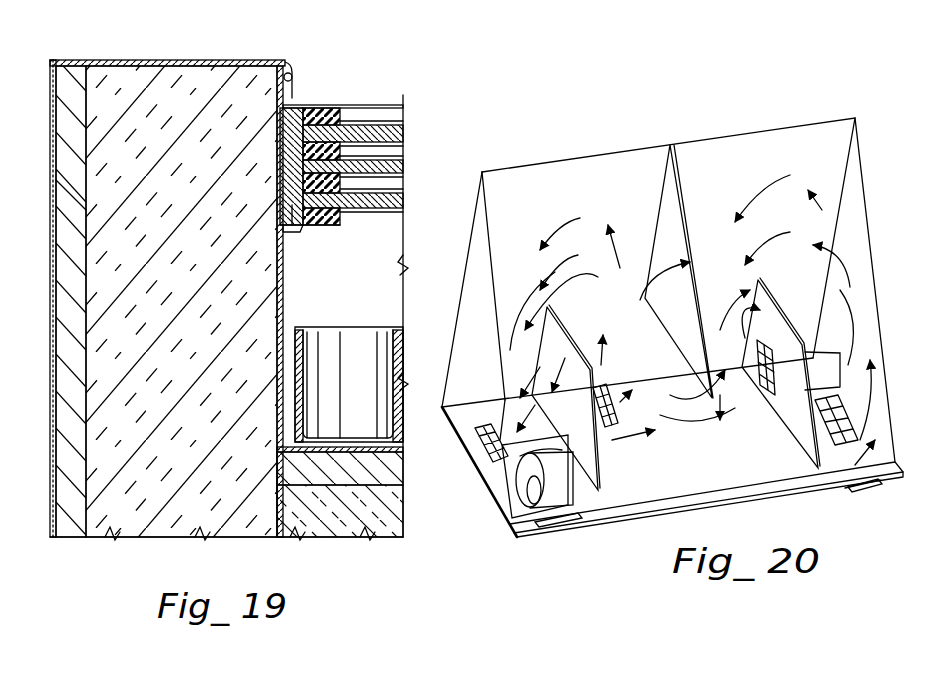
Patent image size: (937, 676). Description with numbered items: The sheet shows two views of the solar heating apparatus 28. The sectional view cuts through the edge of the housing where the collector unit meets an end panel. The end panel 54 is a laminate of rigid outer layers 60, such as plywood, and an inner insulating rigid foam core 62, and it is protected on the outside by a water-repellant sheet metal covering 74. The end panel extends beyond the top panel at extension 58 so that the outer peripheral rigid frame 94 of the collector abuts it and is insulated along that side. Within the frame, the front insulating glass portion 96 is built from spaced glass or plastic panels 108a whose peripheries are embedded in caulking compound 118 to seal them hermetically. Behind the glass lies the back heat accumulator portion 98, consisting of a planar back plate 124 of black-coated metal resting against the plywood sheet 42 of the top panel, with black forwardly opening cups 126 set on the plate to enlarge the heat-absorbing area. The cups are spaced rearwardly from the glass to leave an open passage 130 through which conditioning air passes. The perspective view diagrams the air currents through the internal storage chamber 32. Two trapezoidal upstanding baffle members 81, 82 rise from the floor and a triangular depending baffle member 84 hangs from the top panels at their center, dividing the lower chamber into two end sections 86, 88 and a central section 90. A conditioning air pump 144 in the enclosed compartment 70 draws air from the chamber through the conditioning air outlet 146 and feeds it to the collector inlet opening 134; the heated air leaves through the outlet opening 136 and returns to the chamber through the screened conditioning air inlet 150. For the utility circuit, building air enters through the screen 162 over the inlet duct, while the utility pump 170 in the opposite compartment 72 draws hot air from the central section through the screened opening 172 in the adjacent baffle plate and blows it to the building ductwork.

In FIG. 20, the solar heating apparatus 28 is at (785, 112).
In FIG. 20, the internal storage chamber 32 is at (630, 195).
In FIG. 19, the plywood sheets 42 is at (385, 480).
In FIG. 19, the end panel 54 is at (178, 88).
In FIG. 19, the end panel extension 58 is at (232, 70).
In FIG. 19, the outer layers 60 is at (75, 350).
In FIG. 19, the inner insulating rigid foam core 62 is at (100, 245).
In FIG. 20, the pump containing compartment 70 is at (592, 480).
In FIG. 20, the pump containing compartment 72 is at (815, 345).
In FIG. 19, the water-repellant sheet metal covering 74 is at (56, 178).
In FIG. 20, the upstanding baffle member 81 is at (555, 332).
In FIG. 20, the upstanding baffle member 82 is at (762, 320).
In FIG. 20, the depending baffle member 84 is at (680, 205).
In FIG. 20, the end section 86 is at (610, 425).
In FIG. 20, the end section 88 is at (872, 465).
In FIG. 20, the central section 90 is at (690, 520).
In FIG. 19, the outer peripheral rigid frame 94 is at (282, 95).
In FIG. 19, the front insulating glass portion 96 is at (342, 100).
In FIG. 19, the back heat accumulator portion 98 is at (385, 318).
In FIG. 19, the glass or plastic panel 108a is at (395, 136).
In FIG. 19, the caulking compound 118 is at (292, 235).
In FIG. 19, the planar back plate 124 is at (340, 470).
In FIG. 19, the forwardly opening cups 126 is at (352, 345).
In FIG. 19, the open space or passage 130 is at (380, 255).
In FIG. 20, the inlet opening 134 is at (555, 530).
In FIG. 20, the outlet opening 136 is at (845, 490).
In FIG. 20, the conditioning air pump 144 is at (545, 480).
In FIG. 20, the conditioning air outlet 146 is at (490, 428).
In FIG. 20, the conditioning air inlet 150 is at (830, 448).
In FIG. 20, the screen 162 is at (615, 405).
In FIG. 20, the utility pump 170 is at (808, 352).
In FIG. 20, the screened opening 172 is at (760, 335).